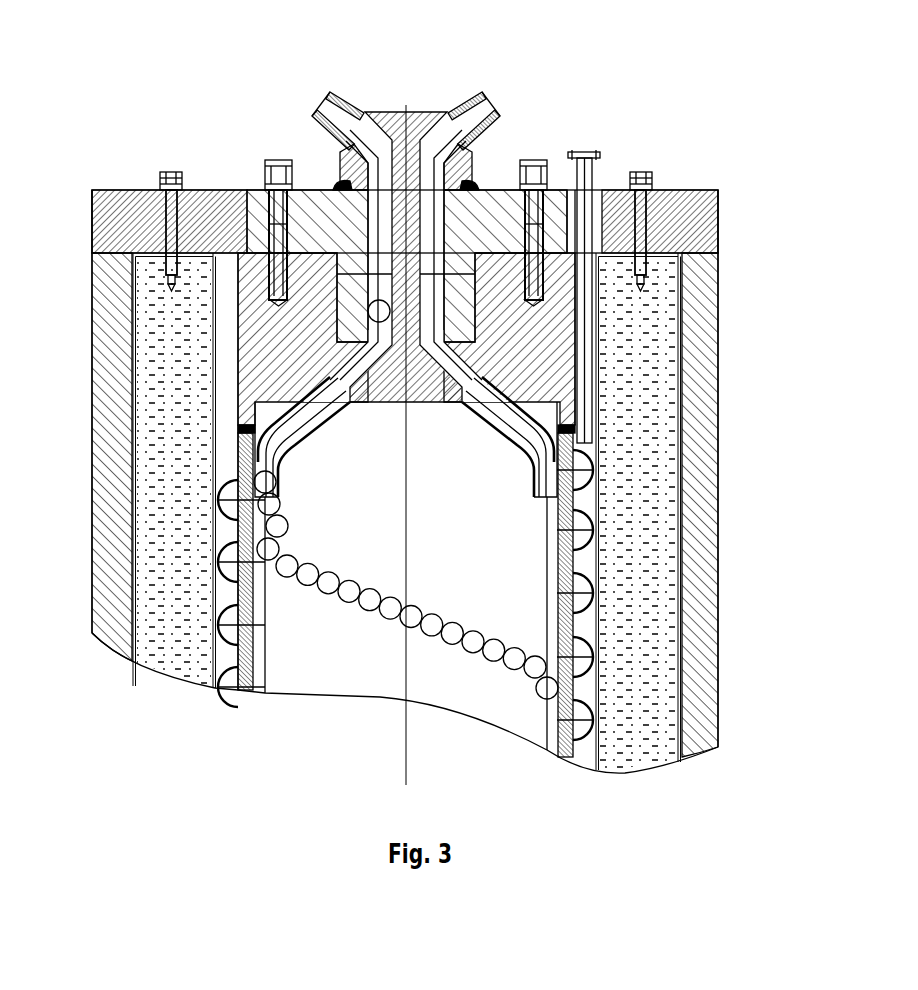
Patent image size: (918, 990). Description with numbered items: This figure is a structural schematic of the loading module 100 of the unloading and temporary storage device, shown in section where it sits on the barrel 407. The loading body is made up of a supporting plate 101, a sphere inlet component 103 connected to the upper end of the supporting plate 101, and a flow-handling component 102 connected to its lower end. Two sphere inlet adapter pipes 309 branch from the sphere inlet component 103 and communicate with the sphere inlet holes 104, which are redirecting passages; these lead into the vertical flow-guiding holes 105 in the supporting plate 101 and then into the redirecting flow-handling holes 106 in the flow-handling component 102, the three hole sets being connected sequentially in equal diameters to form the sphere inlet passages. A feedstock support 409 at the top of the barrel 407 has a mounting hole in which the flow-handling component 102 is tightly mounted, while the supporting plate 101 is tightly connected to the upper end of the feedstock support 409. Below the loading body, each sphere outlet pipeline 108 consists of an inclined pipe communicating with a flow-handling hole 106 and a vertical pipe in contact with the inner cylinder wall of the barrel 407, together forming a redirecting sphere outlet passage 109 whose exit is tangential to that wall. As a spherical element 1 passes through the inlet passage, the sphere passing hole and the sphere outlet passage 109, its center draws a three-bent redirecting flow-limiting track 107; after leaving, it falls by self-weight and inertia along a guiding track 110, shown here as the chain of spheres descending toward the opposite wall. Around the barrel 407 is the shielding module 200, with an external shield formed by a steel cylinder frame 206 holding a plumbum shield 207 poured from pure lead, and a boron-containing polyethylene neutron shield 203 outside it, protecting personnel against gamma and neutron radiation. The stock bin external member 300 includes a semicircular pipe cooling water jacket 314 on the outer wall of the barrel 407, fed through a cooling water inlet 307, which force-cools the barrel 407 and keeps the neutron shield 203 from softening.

The loading module 100 is at (400, 7).
The supporting plate 101 is at (262, 205).
The flow-handling component 102 is at (368, 297).
The sphere inlet component 103 is at (392, 215).
The sphere inlet holes 104 is at (374, 157).
The flow-guiding holes 105 is at (382, 220).
The flow-handling holes 106 is at (380, 292).
The three-bent redirecting flow-limiting track 107 is at (365, 345).
The sphere outlet pipeline 108 is at (255, 430).
The sphere outlet passage 109 is at (285, 442).
The guiding track 110 is at (232, 540).
The spherical element 1 is at (262, 482).
The shielding module 200 is at (740, 281).
The neutron shield 203 is at (707, 322).
The steel cylinder frame 206 is at (687, 527).
The plumbum shield 207 is at (647, 450).
The stock bin external member 300 is at (597, 72).
The cooling water inlet 307 is at (586, 155).
The sphere inlet adapter pipes 309 is at (332, 128).
The cooling water jacket 314 is at (565, 535).
The barrel 407 is at (585, 632).
The feedstock support 409 is at (250, 322).